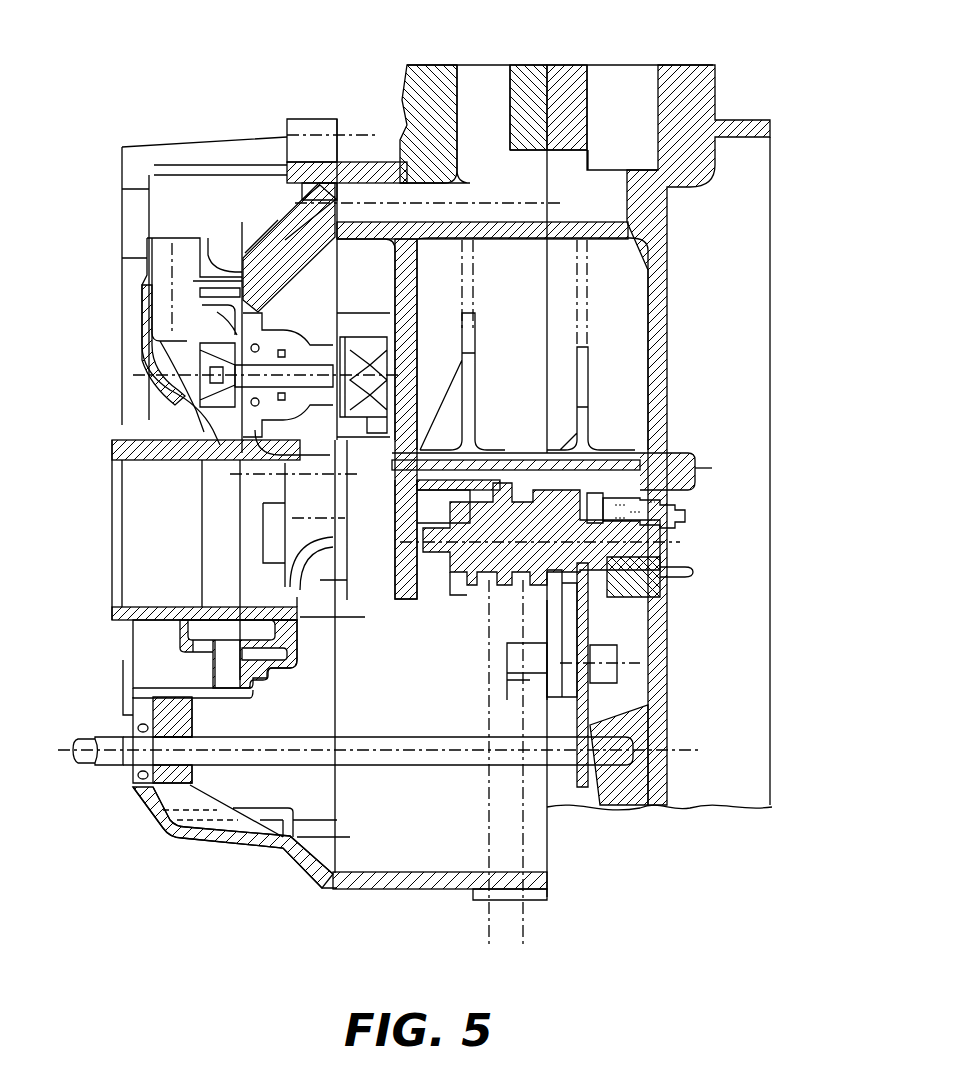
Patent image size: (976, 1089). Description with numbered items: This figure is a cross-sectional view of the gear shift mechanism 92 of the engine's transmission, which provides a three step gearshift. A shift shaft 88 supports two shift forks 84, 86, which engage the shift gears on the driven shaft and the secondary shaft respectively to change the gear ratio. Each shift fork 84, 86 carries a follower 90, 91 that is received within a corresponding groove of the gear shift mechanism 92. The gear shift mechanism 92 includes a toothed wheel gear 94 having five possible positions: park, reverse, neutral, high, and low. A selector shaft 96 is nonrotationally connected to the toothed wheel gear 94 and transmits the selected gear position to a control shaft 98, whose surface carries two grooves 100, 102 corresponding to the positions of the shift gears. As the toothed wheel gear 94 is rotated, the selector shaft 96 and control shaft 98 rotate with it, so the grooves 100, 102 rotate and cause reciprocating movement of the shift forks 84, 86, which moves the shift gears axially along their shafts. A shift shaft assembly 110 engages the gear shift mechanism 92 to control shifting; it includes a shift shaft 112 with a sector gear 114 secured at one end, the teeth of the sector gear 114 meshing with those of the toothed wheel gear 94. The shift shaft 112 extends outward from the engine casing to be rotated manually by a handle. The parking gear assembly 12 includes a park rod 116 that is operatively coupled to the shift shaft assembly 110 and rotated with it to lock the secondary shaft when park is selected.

The parking gear assembly 12 is at (520, 693).
The shift fork 84 is at (468, 330).
The shift fork 86 is at (590, 393).
The shift shaft 88 is at (503, 450).
The follower 90 is at (457, 490).
The follower 91 is at (693, 508).
The gear shift mechanism 92 is at (437, 583).
The toothed wheel gear 94 is at (623, 450).
The selector shaft 96 is at (603, 590).
The control shaft 98 is at (472, 590).
The groove 100 is at (490, 580).
The groove 102 is at (510, 600).
The shift shaft assembly 110 is at (90, 767).
The shift shaft 112 is at (140, 790).
The sector gear 114 is at (590, 707).
The park rod 116 is at (593, 663).